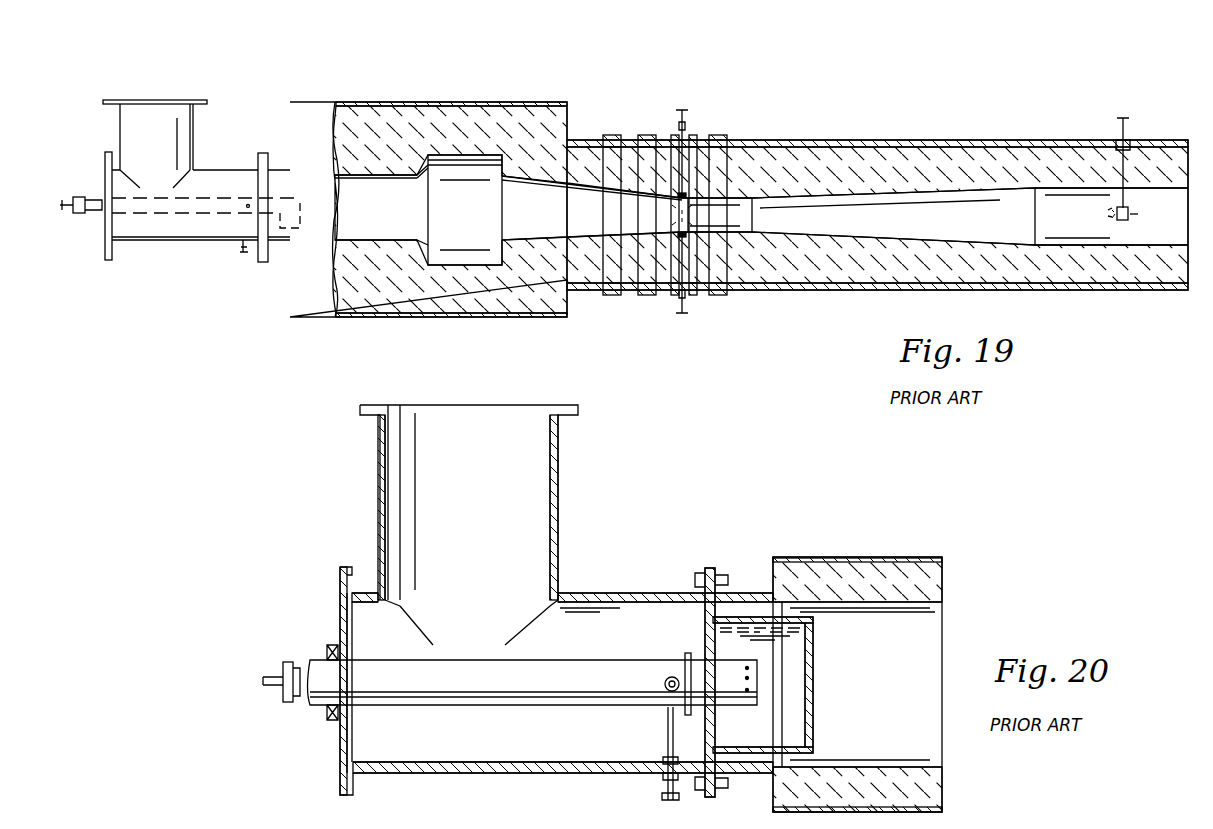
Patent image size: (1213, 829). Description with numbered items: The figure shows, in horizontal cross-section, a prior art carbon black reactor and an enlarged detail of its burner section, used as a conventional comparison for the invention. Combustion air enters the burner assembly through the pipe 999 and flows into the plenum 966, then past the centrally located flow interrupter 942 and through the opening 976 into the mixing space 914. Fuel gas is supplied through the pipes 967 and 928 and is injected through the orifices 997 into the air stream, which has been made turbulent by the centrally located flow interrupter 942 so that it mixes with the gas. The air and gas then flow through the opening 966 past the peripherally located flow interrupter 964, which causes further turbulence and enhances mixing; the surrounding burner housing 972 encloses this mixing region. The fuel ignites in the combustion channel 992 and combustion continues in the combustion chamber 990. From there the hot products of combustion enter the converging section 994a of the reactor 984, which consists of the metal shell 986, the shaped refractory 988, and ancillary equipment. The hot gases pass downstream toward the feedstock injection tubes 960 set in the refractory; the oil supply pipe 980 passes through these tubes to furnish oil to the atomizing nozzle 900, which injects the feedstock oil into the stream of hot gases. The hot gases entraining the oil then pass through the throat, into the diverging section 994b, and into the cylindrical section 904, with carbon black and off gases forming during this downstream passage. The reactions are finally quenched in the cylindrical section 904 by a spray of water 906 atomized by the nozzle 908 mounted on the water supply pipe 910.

In FIG. 19, the atomizing nozzle 900 is at (678, 203).
In FIG. 19, the cylindrical section 904 is at (1118, 243).
In FIG. 19, the spray of water 906 is at (1108, 212).
In FIG. 19, the nozzle 908 is at (1132, 216).
In FIG. 19, the water supply pipe 910 is at (208, 250).
In FIG. 20, the water supply pipe 910 is at (410, 778).
In FIG. 20, the mixing space 914 is at (798, 723).
In FIG. 20, the pipe 928 is at (470, 660).
In FIG. 20, the centrally located flow interrupter 942 is at (685, 656).
In FIG. 19, the feedstock injection tubes 960 is at (628, 152).
In FIG. 20, the peripherally located flow interrupter 964 is at (812, 632).
In FIG. 20, the plenum 966 is at (529, 736).
In FIG. 19, the pipe 967 is at (70, 215).
In FIG. 20, the pipe 967 is at (268, 662).
In FIG. 20, the housing 972 is at (585, 592).
In FIG. 20, the opening 976 is at (718, 740).
In FIG. 19, the oil supply pipe 980 is at (688, 122).
In FIG. 19, the reactor 984 is at (772, 138).
In FIG. 19, the metal shell 986 is at (946, 140).
In FIG. 19, the shaped refractory 988 is at (384, 112).
In FIG. 19, the combustion chamber 990 is at (482, 221).
In FIG. 19, the combustion channel 992 is at (388, 221).
In FIG. 20, the combustion channel 992 is at (922, 717).
In FIG. 19, the converging section 994a is at (572, 221).
In FIG. 19, the diverging section 994b is at (958, 225).
In FIG. 20, the orifices 997 is at (752, 672).
In FIG. 19, the pipe 999 is at (196, 130).
In FIG. 20, the pipe 999 is at (560, 460).